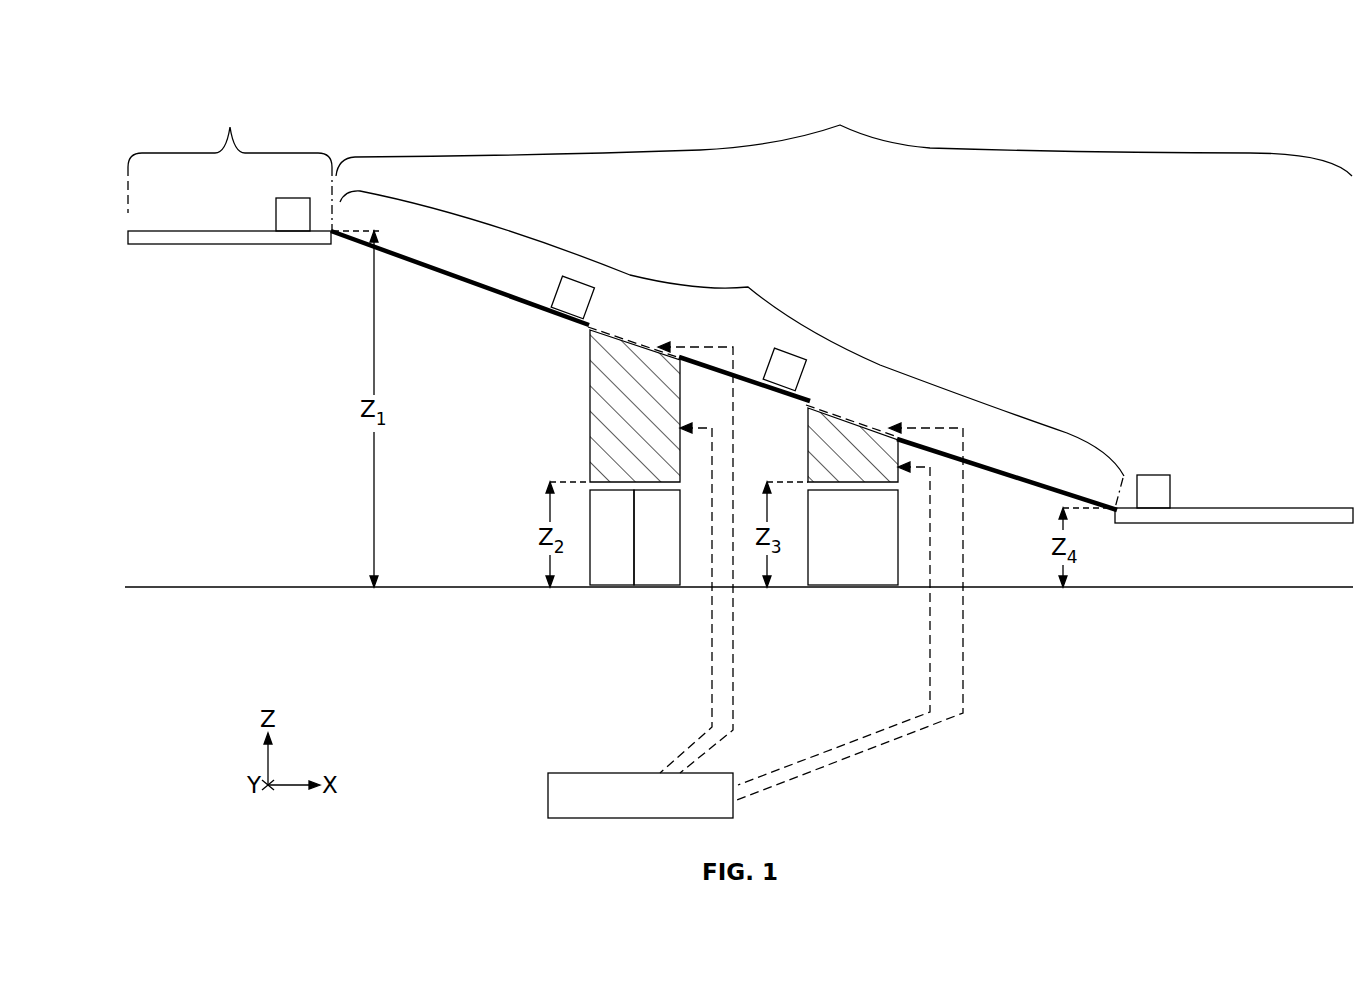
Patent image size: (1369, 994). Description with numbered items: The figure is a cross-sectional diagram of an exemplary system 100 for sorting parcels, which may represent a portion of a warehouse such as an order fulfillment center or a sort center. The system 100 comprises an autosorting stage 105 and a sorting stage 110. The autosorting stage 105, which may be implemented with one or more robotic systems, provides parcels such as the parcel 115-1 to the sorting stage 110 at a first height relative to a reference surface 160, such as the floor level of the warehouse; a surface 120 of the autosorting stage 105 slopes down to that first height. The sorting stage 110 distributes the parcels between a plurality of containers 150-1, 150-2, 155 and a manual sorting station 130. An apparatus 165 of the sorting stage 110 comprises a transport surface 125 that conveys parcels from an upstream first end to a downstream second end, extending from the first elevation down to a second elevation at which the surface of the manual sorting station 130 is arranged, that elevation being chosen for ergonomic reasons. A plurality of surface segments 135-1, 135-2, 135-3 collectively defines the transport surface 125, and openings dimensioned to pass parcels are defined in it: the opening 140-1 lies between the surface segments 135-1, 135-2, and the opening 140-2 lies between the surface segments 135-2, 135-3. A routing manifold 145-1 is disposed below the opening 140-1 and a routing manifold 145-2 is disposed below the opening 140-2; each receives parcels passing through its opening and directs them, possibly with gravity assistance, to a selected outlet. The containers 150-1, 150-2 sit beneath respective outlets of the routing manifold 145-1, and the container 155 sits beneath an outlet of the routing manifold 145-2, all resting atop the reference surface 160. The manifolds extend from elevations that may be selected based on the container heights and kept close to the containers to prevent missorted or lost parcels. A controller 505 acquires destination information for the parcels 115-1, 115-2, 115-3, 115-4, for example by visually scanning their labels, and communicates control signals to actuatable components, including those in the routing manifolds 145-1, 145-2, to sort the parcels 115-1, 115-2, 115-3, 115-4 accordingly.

The system 100 is at (1291, 108).
The autosorting stage 105 is at (231, 151).
The sorting stage 110 is at (844, 120).
The parcel 115-1 is at (291, 198).
The parcel 115-2 is at (557, 284).
The parcel 115-3 is at (798, 355).
The parcel 115-4 is at (1172, 495).
The surface 120 is at (232, 246).
The transport surface 125 is at (732, 349).
The manual sorting station 130 is at (1232, 525).
The surface segment 135-1 is at (470, 279).
The surface segment 135-2 is at (748, 386).
The surface segment 135-3 is at (1022, 480).
The opening 140-1 is at (604, 330).
The opening 140-2 is at (822, 411).
The routing manifold 145-1 is at (589, 412).
The routing manifold 145-2 is at (867, 486).
The container 150-1 is at (604, 590).
The container 150-2 is at (655, 590).
The container 155 is at (855, 590).
The reference surface 160 is at (1168, 592).
The apparatus 165 is at (1114, 233).
The controller 505 is at (562, 773).